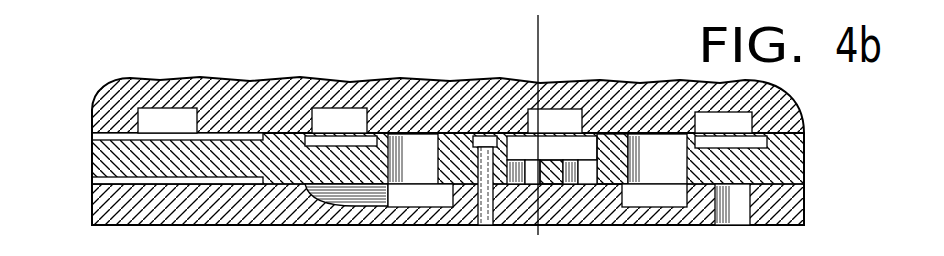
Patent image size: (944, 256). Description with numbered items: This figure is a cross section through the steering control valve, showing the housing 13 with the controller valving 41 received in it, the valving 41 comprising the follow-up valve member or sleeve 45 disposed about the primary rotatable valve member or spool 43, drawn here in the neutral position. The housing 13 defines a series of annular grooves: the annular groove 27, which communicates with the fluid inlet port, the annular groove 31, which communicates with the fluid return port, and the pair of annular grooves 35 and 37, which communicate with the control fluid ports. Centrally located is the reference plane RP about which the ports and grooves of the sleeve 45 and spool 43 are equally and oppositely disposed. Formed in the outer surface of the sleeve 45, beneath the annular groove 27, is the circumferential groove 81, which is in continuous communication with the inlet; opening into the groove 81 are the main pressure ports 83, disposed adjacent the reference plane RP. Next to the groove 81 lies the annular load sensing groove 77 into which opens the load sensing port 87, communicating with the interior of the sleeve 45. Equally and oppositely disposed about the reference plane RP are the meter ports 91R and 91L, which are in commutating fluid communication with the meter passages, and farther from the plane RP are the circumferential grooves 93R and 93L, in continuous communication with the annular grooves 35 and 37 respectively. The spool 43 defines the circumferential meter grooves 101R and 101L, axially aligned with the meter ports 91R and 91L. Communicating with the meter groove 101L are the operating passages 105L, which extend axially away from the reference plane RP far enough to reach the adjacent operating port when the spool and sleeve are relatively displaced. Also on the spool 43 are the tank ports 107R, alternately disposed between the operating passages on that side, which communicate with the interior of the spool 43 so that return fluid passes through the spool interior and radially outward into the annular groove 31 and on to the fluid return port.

The housing 13 is at (782, 117).
The follow-up valve member (sleeve) 45 is at (792, 165).
The primary rotatable valve member (spool) 43 is at (792, 207).
The controller valving 41 is at (73, 167).
The annular groove 31 is at (160, 108).
The annular groove 37 is at (343, 108).
The annular groove 27 is at (578, 109).
The annular groove 35 is at (730, 112).
The circumferential groove 93L is at (310, 147).
The meter ports 91L is at (423, 152).
The operating passages 105L is at (380, 172).
The circumferential meter groove 101L is at (410, 195).
The annular load sensing groove 77 is at (482, 141).
The load sensing port 87 is at (485, 162).
The circumferential groove 81 is at (583, 146).
The main pressure ports 83 is at (525, 165).
The meter ports 91R is at (667, 150).
The circumferential meter groove 101R is at (637, 193).
The circumferential groove 93R is at (722, 140).
The tank ports 107R is at (738, 217).
The central reference plane RP is at (538, 20).